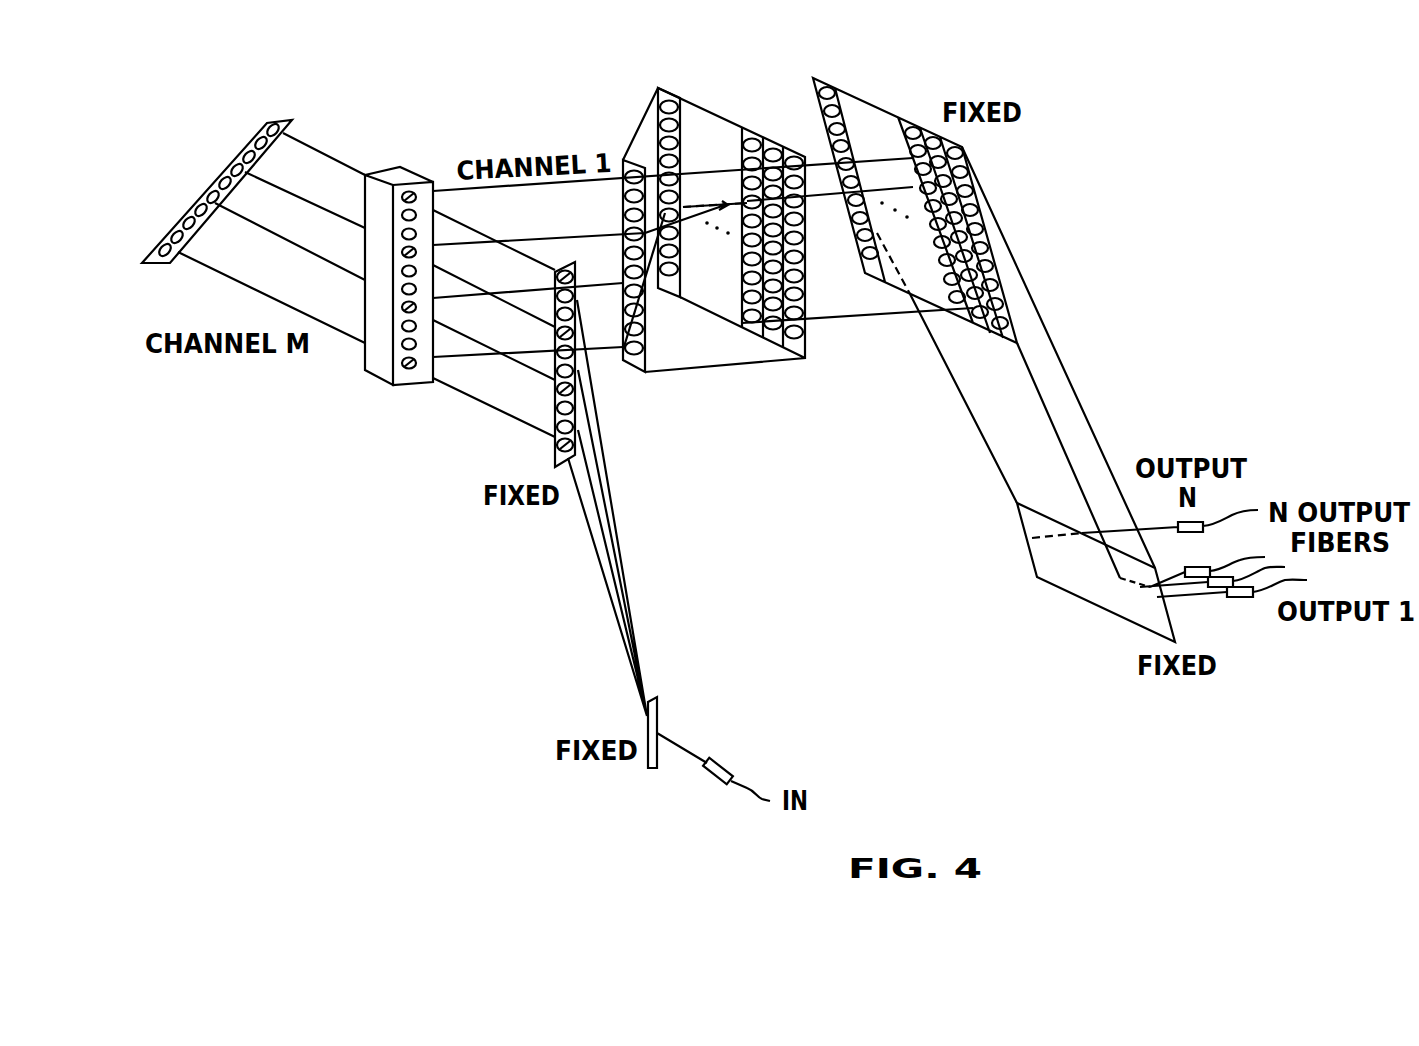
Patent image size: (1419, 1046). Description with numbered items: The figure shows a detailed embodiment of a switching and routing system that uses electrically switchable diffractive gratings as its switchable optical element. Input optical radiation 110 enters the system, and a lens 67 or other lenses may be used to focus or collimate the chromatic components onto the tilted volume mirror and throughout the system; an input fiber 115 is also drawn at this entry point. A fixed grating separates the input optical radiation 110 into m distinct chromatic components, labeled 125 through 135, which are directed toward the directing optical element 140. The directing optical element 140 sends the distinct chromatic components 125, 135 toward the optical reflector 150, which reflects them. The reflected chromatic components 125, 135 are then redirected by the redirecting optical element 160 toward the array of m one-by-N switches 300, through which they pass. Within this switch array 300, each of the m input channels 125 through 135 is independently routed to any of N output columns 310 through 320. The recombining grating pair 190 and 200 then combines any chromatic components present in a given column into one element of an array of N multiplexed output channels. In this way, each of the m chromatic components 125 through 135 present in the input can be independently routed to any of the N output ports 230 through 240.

The optical reflector 150 is at (252, 143).
The redirecting optical element 160 is at (403, 274).
The directing optical element 140 is at (413, 383).
The output column 320 is at (660, 128).
The array of m 1×N switches 300 is at (725, 218).
The output column 310 is at (805, 333).
The recombining grating 190 is at (872, 102).
The distinct chromatic component 135 is at (617, 535).
The distinct chromatic component 125 is at (605, 582).
The input optical radiation 110 is at (690, 753).
The lens 67 is at (703, 763).
The input fiber 115 is at (728, 770).
The output port 240 is at (1205, 522).
The output port 230 is at (1236, 598).
The recombining grating 200 is at (1087, 602).